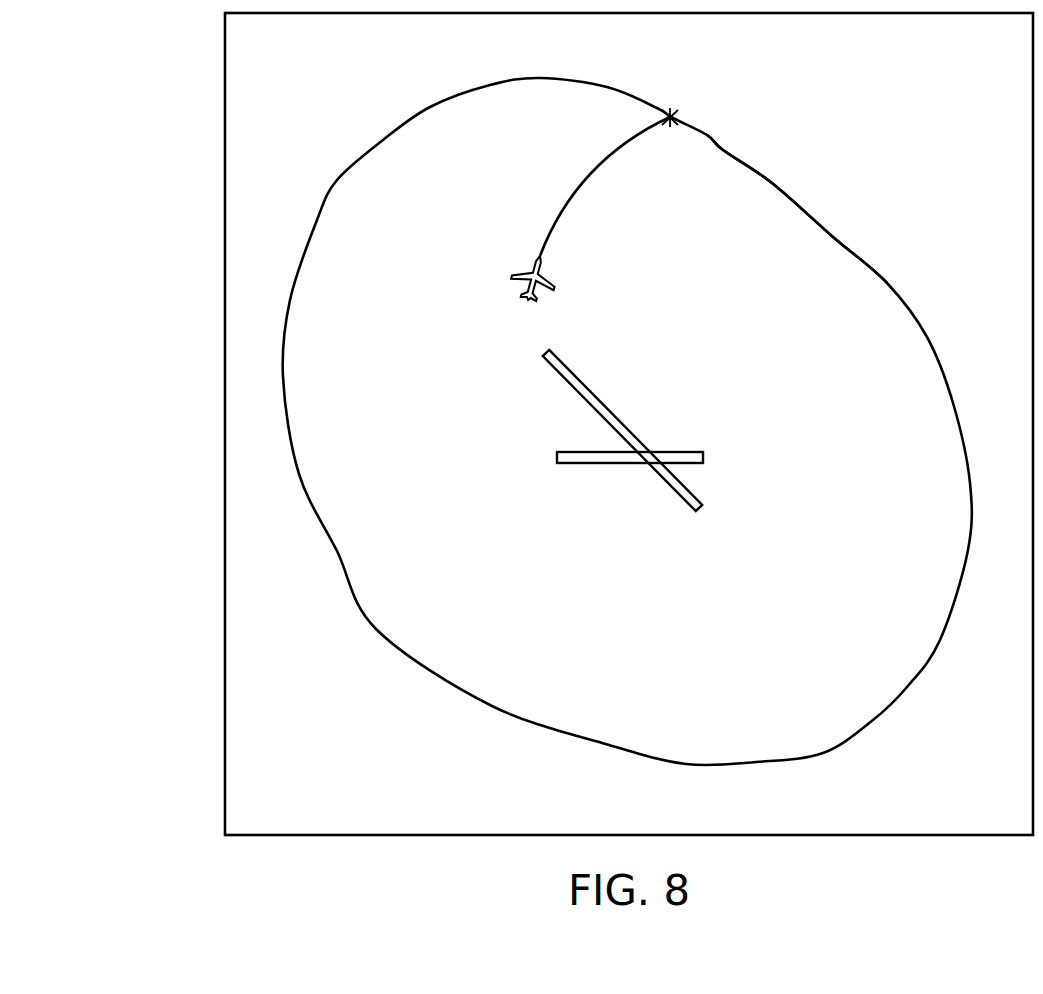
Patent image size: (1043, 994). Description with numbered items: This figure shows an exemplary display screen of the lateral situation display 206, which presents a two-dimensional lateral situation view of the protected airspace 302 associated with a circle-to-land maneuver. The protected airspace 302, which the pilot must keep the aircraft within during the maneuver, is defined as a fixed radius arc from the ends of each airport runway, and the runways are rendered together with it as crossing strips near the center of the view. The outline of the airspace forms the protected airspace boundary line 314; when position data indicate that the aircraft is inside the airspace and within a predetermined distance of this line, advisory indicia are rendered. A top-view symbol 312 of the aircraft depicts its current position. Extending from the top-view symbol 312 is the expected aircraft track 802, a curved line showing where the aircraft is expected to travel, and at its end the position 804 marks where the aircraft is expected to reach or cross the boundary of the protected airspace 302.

The lateral situation display 206 is at (225, 200).
The protected airspace 302 is at (627, 409).
The protected airspace boundary line 314 is at (773, 183).
The top-view symbol 312 is at (537, 259).
The expected aircraft track 802 is at (602, 162).
The position 804 is at (670, 114).